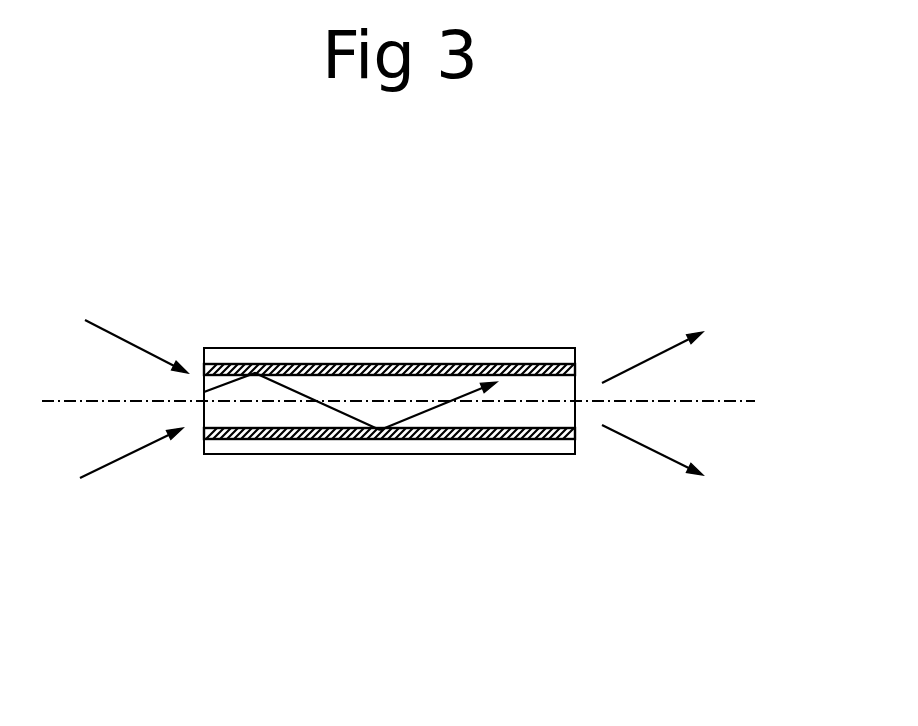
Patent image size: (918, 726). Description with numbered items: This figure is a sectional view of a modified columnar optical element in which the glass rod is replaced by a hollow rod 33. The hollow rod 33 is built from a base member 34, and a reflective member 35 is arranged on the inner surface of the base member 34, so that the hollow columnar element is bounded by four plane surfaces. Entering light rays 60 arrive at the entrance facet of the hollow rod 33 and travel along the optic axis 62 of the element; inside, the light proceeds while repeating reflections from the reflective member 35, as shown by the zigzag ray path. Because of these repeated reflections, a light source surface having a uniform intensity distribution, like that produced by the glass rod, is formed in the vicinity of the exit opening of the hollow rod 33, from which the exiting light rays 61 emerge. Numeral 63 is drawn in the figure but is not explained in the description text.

The hollow rod 33 is at (560, 597).
The base member 34 is at (460, 360).
The reflective member 35 is at (532, 368).
The entering light rays 60 is at (127, 455).
The exiting light rays 61 is at (632, 370).
The optic axis 62 is at (370, 400).
The reflected light ray 63 is at (443, 405).